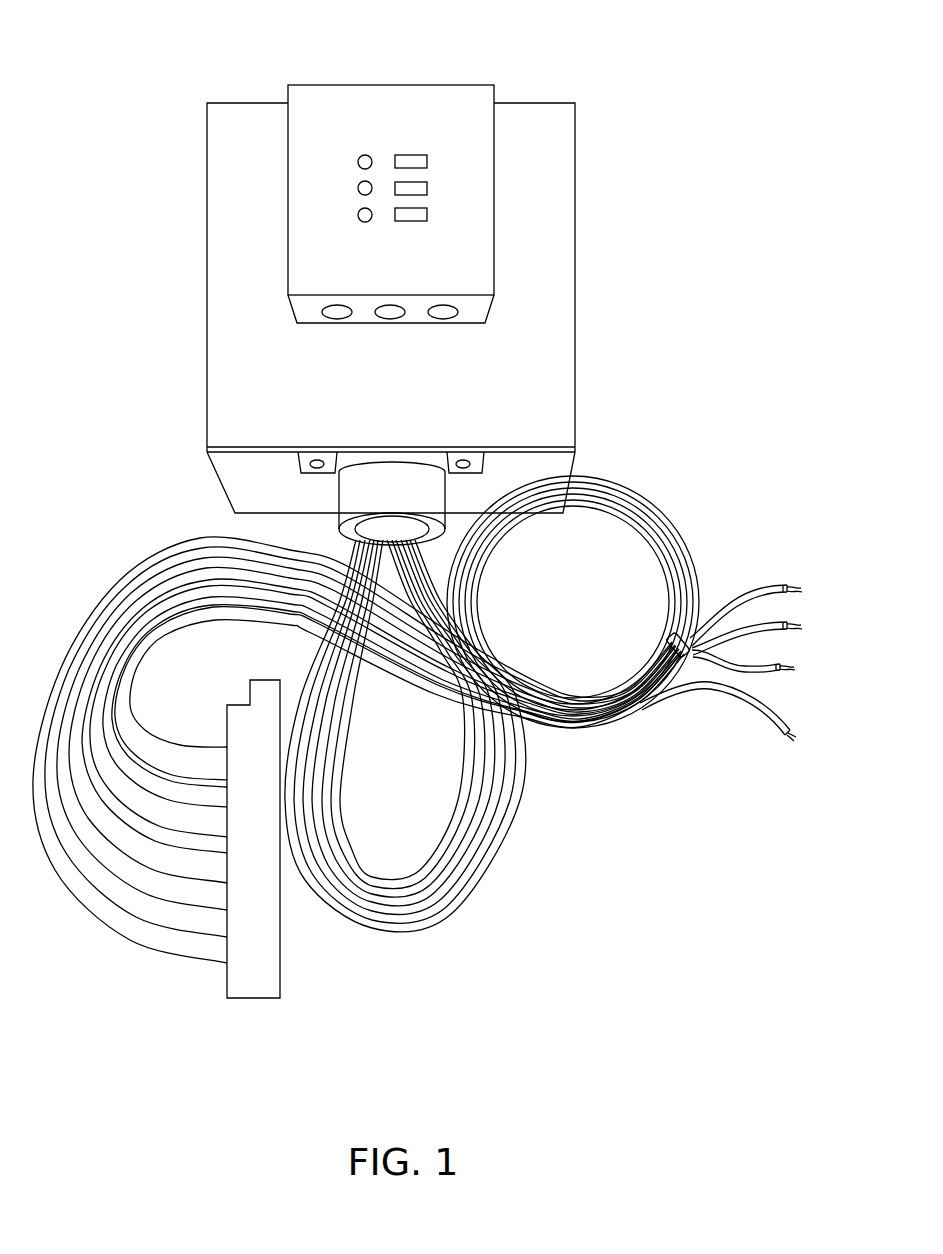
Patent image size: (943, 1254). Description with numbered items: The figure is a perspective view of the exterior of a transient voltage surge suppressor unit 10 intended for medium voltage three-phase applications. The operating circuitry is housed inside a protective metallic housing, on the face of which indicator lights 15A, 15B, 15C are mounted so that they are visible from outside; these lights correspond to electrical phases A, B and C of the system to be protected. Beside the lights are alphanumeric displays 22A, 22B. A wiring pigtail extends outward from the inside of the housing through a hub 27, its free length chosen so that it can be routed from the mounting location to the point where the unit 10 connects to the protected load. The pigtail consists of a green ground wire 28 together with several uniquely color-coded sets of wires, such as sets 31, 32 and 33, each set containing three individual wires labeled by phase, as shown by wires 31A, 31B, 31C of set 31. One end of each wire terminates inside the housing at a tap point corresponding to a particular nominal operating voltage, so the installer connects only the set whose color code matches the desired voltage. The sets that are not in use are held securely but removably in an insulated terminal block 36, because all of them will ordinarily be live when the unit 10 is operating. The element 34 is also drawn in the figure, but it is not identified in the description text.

The transient voltage surge suppressor unit 10 is at (740, 97).
The indicator light 15A is at (358, 157).
The indicator light 15B is at (358, 192).
The indicator light 15C is at (361, 222).
The alphanumeric display 22A is at (427, 162).
The alphanumeric display 22B is at (427, 188).
The hub 27 is at (308, 526).
The green ground wire 28 is at (765, 702).
The color-coded set of wires 31 is at (694, 625).
The wire 31A is at (783, 586).
The wire 31B is at (773, 632).
The wire 31C is at (773, 672).
The color-coded set of wires 32 is at (192, 800).
The color-coded set of wires 33 is at (202, 835).
The sensor wires 34 is at (167, 905).
The insulated terminal block 36 is at (243, 992).